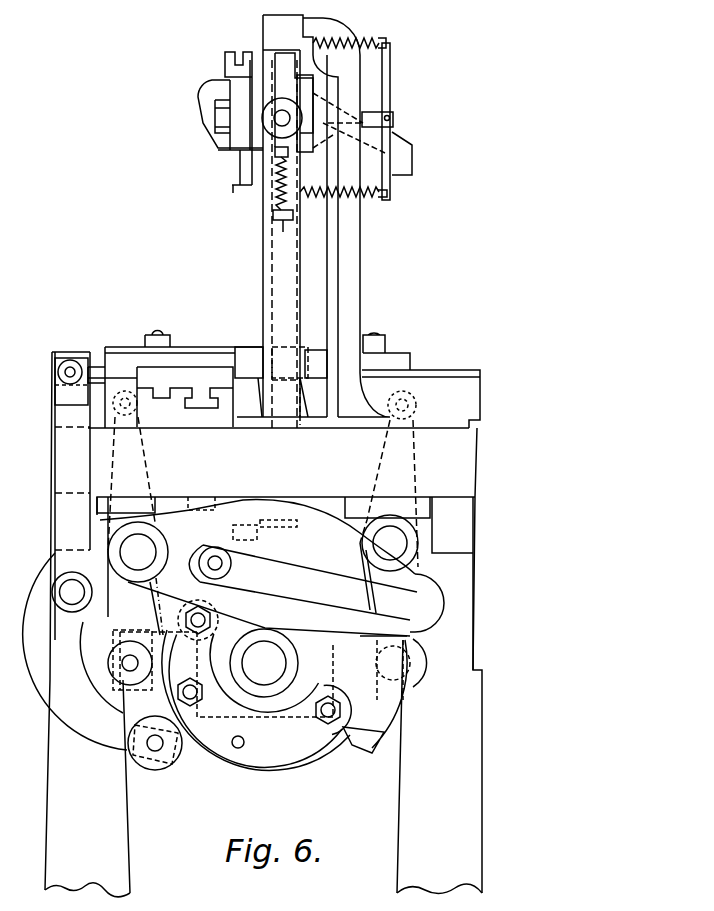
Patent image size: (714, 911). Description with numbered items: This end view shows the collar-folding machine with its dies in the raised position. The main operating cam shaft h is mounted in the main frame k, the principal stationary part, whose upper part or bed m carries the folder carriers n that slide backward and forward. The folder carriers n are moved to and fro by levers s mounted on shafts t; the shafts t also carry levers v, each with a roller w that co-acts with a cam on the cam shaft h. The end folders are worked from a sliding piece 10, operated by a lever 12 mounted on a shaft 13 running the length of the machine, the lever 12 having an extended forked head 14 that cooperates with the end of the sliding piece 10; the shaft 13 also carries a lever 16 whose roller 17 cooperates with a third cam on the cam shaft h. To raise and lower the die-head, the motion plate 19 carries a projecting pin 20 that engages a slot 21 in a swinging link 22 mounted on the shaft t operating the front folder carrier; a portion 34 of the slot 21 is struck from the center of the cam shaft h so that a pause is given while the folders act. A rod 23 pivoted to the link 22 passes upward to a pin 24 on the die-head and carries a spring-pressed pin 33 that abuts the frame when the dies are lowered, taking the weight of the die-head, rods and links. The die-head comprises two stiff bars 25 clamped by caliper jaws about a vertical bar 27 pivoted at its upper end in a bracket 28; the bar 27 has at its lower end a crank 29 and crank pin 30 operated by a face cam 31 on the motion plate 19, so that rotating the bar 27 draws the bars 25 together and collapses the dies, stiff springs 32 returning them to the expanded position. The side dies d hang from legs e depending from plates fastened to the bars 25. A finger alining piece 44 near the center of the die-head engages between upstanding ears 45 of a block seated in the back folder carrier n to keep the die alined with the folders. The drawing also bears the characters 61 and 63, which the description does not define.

The sliding piece 10 is at (87, 377).
The lever 12 is at (65, 455).
The shaft 13 is at (73, 590).
The forked head 14 is at (70, 370).
The lever 16 is at (82, 708).
The roller 17 is at (143, 768).
The motion plate 19 is at (313, 588).
The projecting pin 20 is at (222, 573).
The slot 21 is at (318, 598).
The swinging link 22 is at (427, 620).
The rod 23 is at (283, 285).
The pin 24 is at (280, 118).
The stiff bars 25 is at (205, 100).
The vertical bar 27 is at (268, 254).
The bracket 28 is at (353, 263).
The crank 29 is at (283, 520).
The crank pin 30 is at (233, 535).
The face cams 31 is at (387, 708).
The springs 32 is at (361, 43).
The spring-pressed pin 33 is at (288, 232).
The portion of slot 34 is at (275, 606).
The finger alining piece 44 is at (405, 152).
The upstanding ears 45 is at (397, 360).
The plate 61 is at (213, 742).
The hole 63 is at (245, 742).
The side dies d is at (240, 198).
The legs e is at (238, 170).
The main operating cam shaft h is at (273, 658).
The main frame k is at (318, 668).
The bed m is at (467, 482).
The folder carriers n is at (473, 399).
The levers s is at (142, 467).
The shafts t is at (143, 552).
The levers v is at (403, 606).
The roller w is at (130, 687).